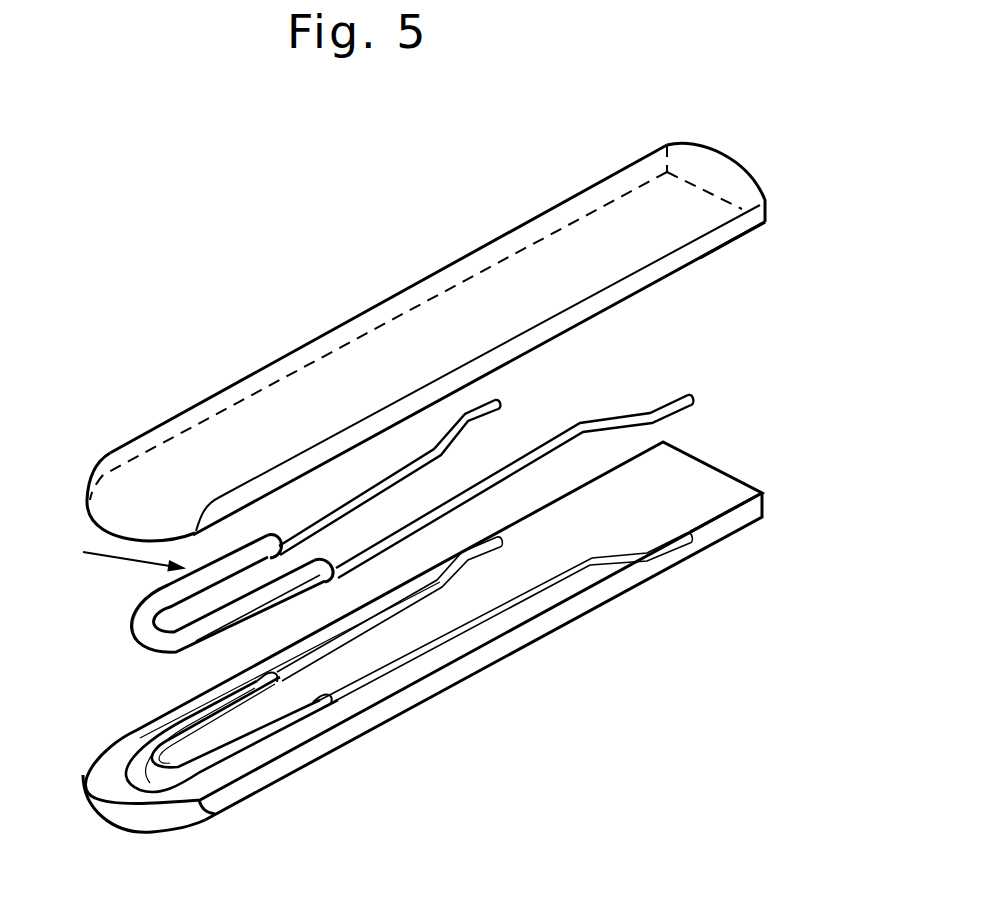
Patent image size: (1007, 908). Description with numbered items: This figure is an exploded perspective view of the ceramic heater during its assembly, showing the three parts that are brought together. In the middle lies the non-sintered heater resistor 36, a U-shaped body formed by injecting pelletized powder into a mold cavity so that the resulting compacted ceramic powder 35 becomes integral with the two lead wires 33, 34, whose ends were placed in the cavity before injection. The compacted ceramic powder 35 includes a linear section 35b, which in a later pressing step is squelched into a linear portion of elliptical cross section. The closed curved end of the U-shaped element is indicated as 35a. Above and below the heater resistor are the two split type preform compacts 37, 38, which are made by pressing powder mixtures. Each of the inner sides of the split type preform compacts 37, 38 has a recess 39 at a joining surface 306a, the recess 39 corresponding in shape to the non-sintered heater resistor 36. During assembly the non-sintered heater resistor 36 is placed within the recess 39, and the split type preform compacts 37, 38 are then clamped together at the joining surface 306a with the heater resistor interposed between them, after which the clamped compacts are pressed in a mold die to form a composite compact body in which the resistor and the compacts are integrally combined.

The lead wire 33 is at (500, 400).
The lead wire 34 is at (577, 427).
The compacted ceramic powder 35 is at (287, 646).
The curved end portion of heating element 35a is at (150, 638).
The linear section 35b is at (250, 557).
The non-sintered heater resistor 36 is at (111, 553).
The split type preform compact 37 is at (422, 637).
The split type preform compact 38 is at (487, 298).
The recess 39 is at (280, 727).
The joining surface 306a is at (698, 258).